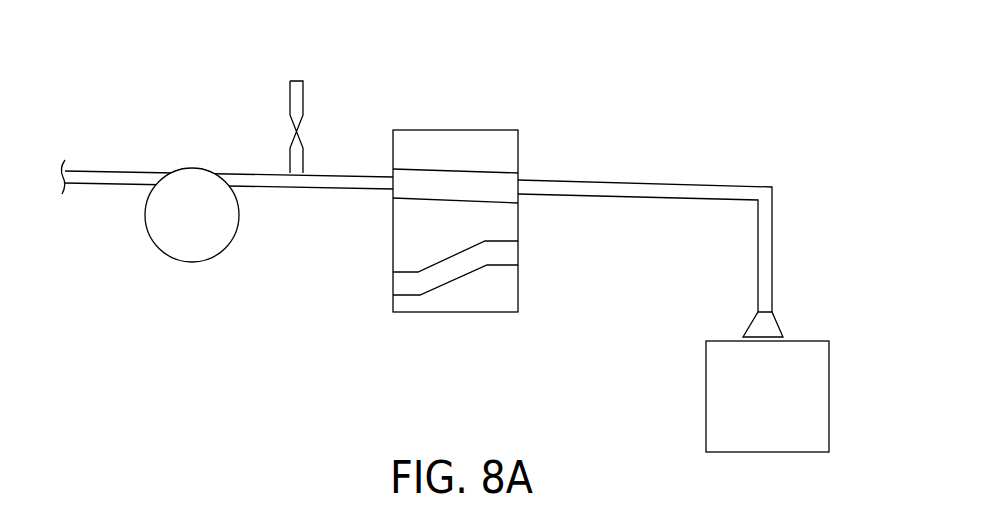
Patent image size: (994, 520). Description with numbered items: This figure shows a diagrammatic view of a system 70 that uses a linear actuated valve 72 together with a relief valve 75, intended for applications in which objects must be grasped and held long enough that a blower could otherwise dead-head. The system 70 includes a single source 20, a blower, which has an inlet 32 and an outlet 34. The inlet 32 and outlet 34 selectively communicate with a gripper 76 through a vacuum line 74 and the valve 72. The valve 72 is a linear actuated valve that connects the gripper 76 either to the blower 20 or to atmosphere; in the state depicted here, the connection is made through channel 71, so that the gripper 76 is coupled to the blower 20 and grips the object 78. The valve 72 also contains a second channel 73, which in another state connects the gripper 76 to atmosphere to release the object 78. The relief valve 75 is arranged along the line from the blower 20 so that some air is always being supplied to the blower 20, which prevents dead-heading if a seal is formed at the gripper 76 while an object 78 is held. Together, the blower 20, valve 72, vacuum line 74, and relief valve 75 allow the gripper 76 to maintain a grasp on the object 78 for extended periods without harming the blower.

The system 70 is at (595, 62).
The outlet 34 is at (122, 170).
The inlet 32 is at (270, 190).
The single source 20 is at (192, 262).
The relief valve 75 is at (280, 132).
The linear actuated valve 72 is at (457, 130).
The channel 71 is at (505, 170).
The channel 73 is at (507, 263).
The vacuum line 74 is at (645, 182).
The gripper 76 is at (777, 317).
The object 78 is at (830, 387).